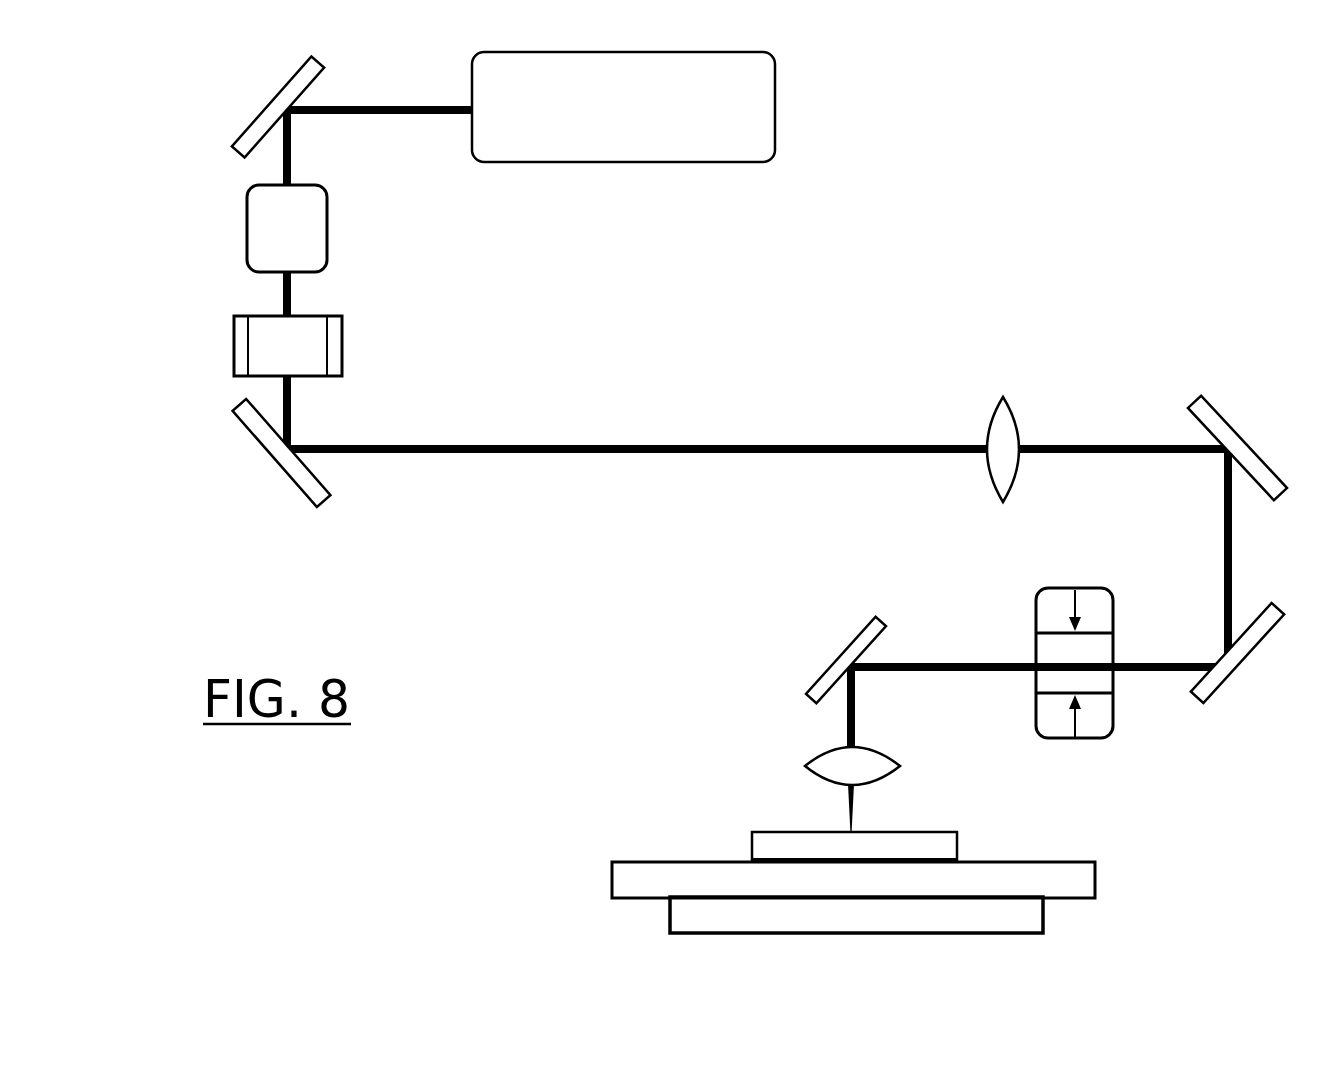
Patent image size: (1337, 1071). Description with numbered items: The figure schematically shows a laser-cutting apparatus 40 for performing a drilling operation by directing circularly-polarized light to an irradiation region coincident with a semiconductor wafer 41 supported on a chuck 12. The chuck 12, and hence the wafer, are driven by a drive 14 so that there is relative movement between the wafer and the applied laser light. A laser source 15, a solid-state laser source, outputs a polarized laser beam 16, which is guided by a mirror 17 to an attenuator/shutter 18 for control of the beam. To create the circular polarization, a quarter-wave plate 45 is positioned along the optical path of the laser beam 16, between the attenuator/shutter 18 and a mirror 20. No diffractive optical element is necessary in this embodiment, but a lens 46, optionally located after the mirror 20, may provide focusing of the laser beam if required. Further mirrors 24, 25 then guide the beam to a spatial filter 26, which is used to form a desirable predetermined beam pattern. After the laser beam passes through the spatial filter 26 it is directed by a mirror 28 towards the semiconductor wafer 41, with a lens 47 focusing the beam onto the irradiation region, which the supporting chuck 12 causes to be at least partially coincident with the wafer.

The chuck 12 is at (612, 878).
The drive 14 is at (1030, 921).
The laser source 15 is at (623, 107).
The laser beam 16 is at (405, 118).
The mirror 17 is at (316, 55).
The attenuator/shutter 18 is at (327, 240).
The mirror 20 is at (303, 497).
The mirror 24 is at (1210, 420).
The mirror 25 is at (1260, 636).
The spatial filter 26 is at (1036, 592).
The mirror 28 is at (855, 640).
The laser-cutting apparatus 40 is at (965, 217).
The semiconductor wafer 41 is at (760, 842).
The quarter-wave plate 45 is at (327, 355).
The lens 46 is at (1007, 410).
The lens 47 is at (820, 768).